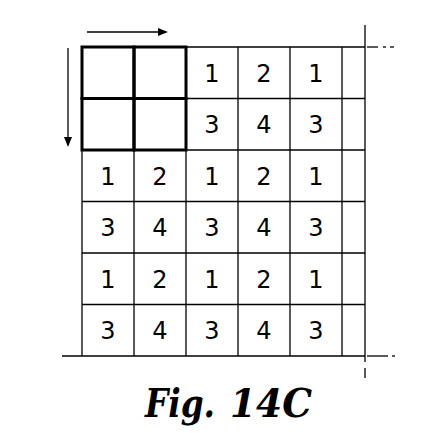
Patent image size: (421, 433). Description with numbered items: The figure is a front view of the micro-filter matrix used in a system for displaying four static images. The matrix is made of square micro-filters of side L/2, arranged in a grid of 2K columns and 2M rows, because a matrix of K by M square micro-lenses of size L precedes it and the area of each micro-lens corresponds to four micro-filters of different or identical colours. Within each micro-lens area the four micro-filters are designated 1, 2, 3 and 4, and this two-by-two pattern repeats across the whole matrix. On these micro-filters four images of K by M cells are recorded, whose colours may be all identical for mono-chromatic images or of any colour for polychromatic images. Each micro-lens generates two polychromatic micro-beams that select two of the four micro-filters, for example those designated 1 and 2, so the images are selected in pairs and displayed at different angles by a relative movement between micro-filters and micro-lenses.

The micro-filter 1 is at (108, 73).
The micro-filter 2 is at (160, 73).
The micro-filter 3 is at (108, 125).
The micro-filter 4 is at (160, 125).
The micro-filter matrix width 2K is at (165, 27).
The micro-filter matrix height 2M is at (62, 120).